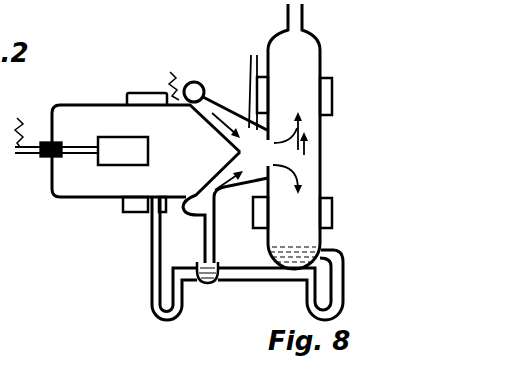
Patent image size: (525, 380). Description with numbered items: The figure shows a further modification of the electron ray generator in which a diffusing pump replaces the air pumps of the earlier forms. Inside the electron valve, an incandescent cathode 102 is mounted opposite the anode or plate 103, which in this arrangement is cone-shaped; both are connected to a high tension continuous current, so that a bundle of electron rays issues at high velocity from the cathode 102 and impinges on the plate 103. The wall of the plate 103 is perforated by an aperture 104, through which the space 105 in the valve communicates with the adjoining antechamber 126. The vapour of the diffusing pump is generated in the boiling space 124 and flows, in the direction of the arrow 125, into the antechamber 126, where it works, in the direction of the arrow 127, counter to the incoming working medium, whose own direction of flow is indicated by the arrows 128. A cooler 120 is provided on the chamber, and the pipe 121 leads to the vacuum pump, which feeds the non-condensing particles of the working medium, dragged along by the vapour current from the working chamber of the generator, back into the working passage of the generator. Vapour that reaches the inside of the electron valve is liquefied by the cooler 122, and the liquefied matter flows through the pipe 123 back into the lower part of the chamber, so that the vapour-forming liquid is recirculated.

The cathode 102 is at (108, 138).
The anode or plate 103 is at (213, 95).
The aperture 104 is at (247, 100).
The space in the valve 105 is at (67, 175).
The cooler 120 is at (330, 97).
The pipe 121 is at (297, 22).
The cooler 122 is at (132, 199).
The pipe 123 is at (150, 270).
The boiling space 124 is at (211, 279).
The arrow 125 is at (228, 182).
The antechamber 126 is at (288, 213).
The arrow 127 is at (303, 132).
The arrows 128 is at (272, 163).